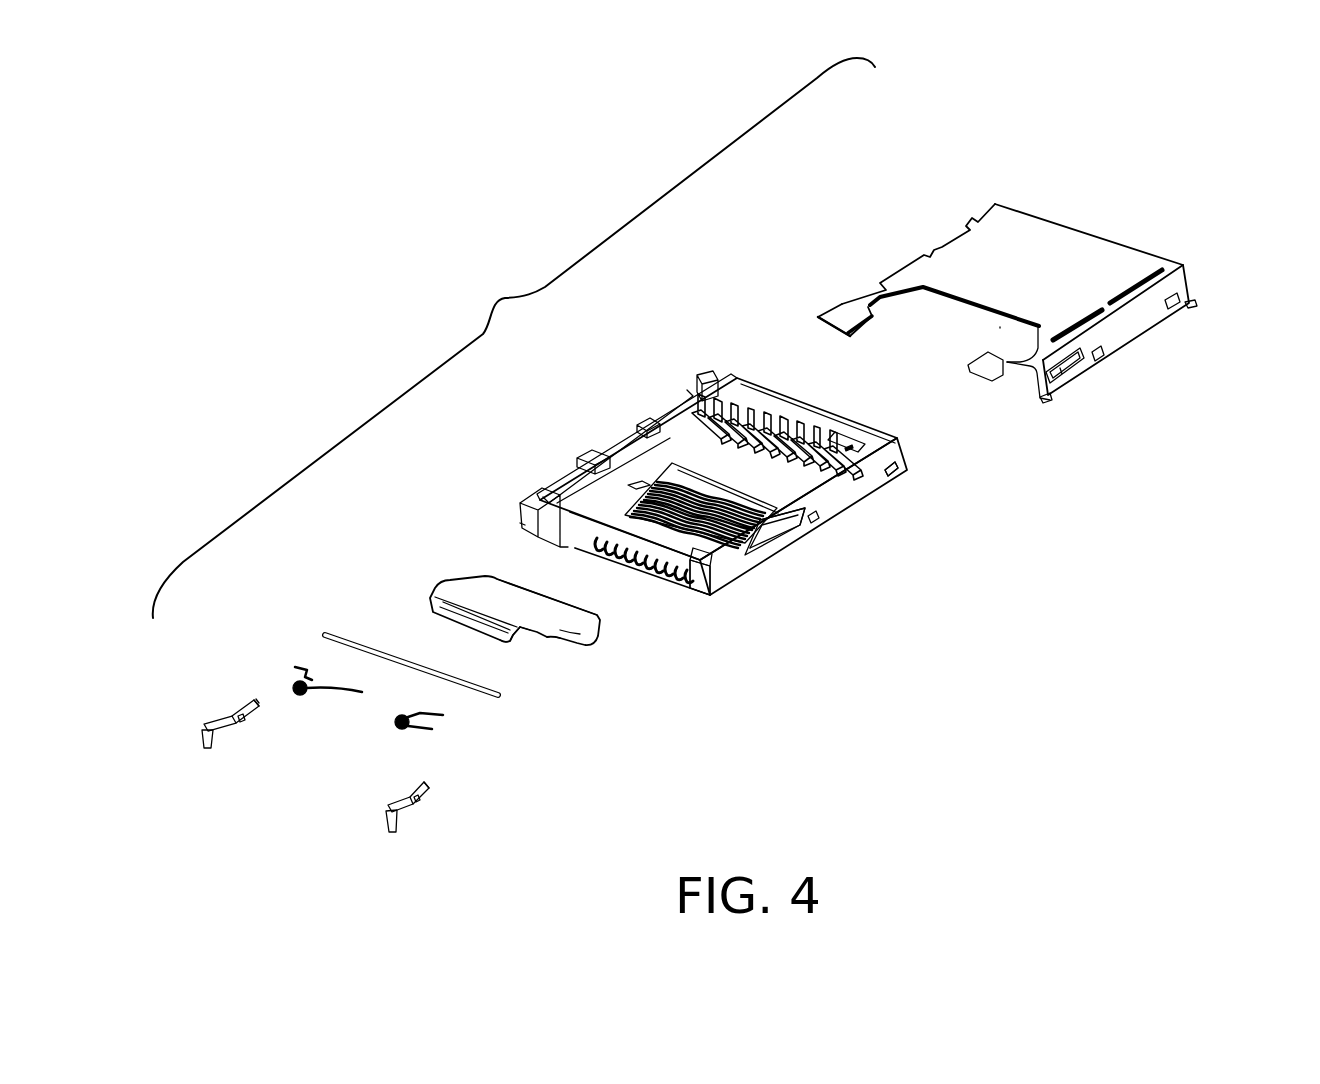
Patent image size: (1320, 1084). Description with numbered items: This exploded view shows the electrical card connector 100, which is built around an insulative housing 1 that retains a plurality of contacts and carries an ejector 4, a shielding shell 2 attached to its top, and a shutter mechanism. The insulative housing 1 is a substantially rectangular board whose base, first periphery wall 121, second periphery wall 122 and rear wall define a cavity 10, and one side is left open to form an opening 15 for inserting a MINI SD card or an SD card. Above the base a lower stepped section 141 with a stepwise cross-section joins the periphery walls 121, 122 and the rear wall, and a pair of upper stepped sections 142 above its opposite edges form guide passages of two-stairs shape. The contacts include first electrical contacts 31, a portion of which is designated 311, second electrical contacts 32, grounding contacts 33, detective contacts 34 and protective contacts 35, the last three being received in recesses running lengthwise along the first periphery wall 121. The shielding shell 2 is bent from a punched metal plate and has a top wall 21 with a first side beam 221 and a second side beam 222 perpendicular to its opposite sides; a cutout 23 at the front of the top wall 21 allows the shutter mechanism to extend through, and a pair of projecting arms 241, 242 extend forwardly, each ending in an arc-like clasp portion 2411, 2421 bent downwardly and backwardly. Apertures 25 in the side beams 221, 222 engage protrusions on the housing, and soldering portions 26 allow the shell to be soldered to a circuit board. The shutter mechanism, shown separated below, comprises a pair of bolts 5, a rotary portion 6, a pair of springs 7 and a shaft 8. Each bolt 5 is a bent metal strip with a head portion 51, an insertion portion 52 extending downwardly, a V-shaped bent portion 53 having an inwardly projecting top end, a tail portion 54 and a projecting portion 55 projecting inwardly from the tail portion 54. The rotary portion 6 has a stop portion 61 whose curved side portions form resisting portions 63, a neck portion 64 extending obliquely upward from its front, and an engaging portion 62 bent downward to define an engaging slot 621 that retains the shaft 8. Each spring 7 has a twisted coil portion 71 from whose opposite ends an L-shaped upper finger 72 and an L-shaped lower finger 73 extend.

The electrical card connector 100 is at (498, 297).
The insulative housing 1 is at (713, 494).
The cavity 10 is at (635, 470).
The ejector 4 is at (857, 445).
The first periphery wall 121 is at (882, 477).
The second periphery wall 122 is at (597, 455).
The lower stepped section 141 is at (560, 530).
The upper stepped sections 142 is at (522, 520).
The opening 15 is at (675, 585).
The first electrical contacts 31 is at (733, 543).
The solder tails 311 is at (643, 567).
The second electrical contacts 32 is at (812, 473).
The grounding contacts 33 is at (713, 373).
The detective contacts 34 is at (688, 400).
The protective contacts 35 is at (637, 437).
The shielding shell 2 is at (985, 288).
The top wall 21 is at (1013, 240).
The first side beam 221 is at (1133, 313).
The second side beam 222 is at (890, 300).
The cutout 23 is at (1000, 327).
The projecting arm 241 is at (1010, 367).
The arc-like clasp portion 2411 is at (992, 378).
The projecting arm 242 is at (820, 310).
The arc-like clasp portion 2421 is at (823, 312).
The apertures 25 is at (1187, 295).
The soldering portions 26 is at (1197, 310).
The rotary portion 6 is at (524, 669).
The stop portion 61 is at (557, 622).
The engaging portion 62 is at (443, 603).
The engaging slot 621 is at (513, 640).
The resisting portions 63 is at (580, 627).
The neck portion 64 is at (527, 630).
The spring 7 is at (375, 703).
The coil portion 71 is at (308, 695).
The upper finger 72 is at (337, 692).
The lower finger 73 is at (285, 675).
The shaft 8 is at (350, 628).
The bolt 5 is at (308, 767).
The head portion 51 is at (203, 729).
The insertion portion 52 is at (205, 757).
The V-shaped bent portion 53 is at (230, 730).
The tail portion 54 is at (245, 708).
The projecting portion 55 is at (255, 737).